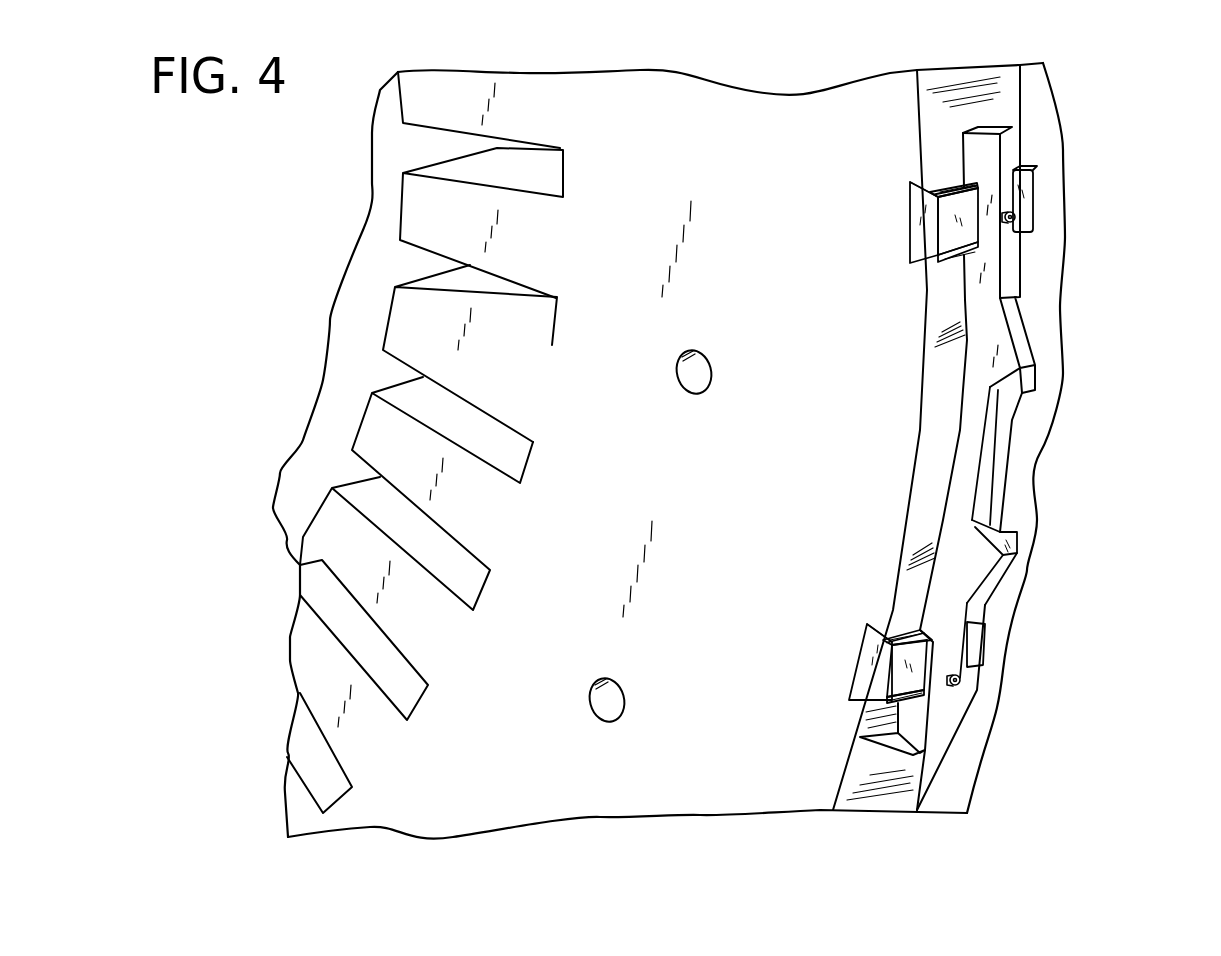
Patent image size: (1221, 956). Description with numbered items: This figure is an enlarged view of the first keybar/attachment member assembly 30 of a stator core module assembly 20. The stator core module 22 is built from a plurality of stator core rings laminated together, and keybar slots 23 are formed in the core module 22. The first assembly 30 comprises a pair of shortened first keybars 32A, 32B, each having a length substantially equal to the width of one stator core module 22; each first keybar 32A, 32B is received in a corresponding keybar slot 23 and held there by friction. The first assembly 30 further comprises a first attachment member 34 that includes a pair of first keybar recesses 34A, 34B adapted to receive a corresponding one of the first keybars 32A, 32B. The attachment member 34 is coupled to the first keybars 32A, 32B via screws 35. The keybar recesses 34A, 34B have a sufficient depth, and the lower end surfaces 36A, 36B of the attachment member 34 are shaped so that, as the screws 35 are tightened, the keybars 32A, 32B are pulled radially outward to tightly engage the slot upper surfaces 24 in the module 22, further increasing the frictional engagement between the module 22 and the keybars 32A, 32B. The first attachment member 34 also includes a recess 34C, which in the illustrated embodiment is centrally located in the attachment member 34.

The stator core module assembly 20 is at (1108, 346).
The stator core module 22 is at (718, 506).
The keybar slots 23 is at (910, 240).
The slot upper surfaces 24 is at (912, 182).
The first keybar/attachment member assembly 30 is at (1029, 324).
The first keybar 32A is at (910, 217).
The first keybar 32B is at (863, 670).
The first attachment member 34 is at (987, 549).
The first keybar recess 34A is at (980, 203).
The first keybar recess 34B is at (933, 663).
The recess 34C is at (988, 473).
The screws 35 is at (1028, 216).
The lower end surface 36A is at (963, 157).
The lower end surface 36B is at (930, 607).